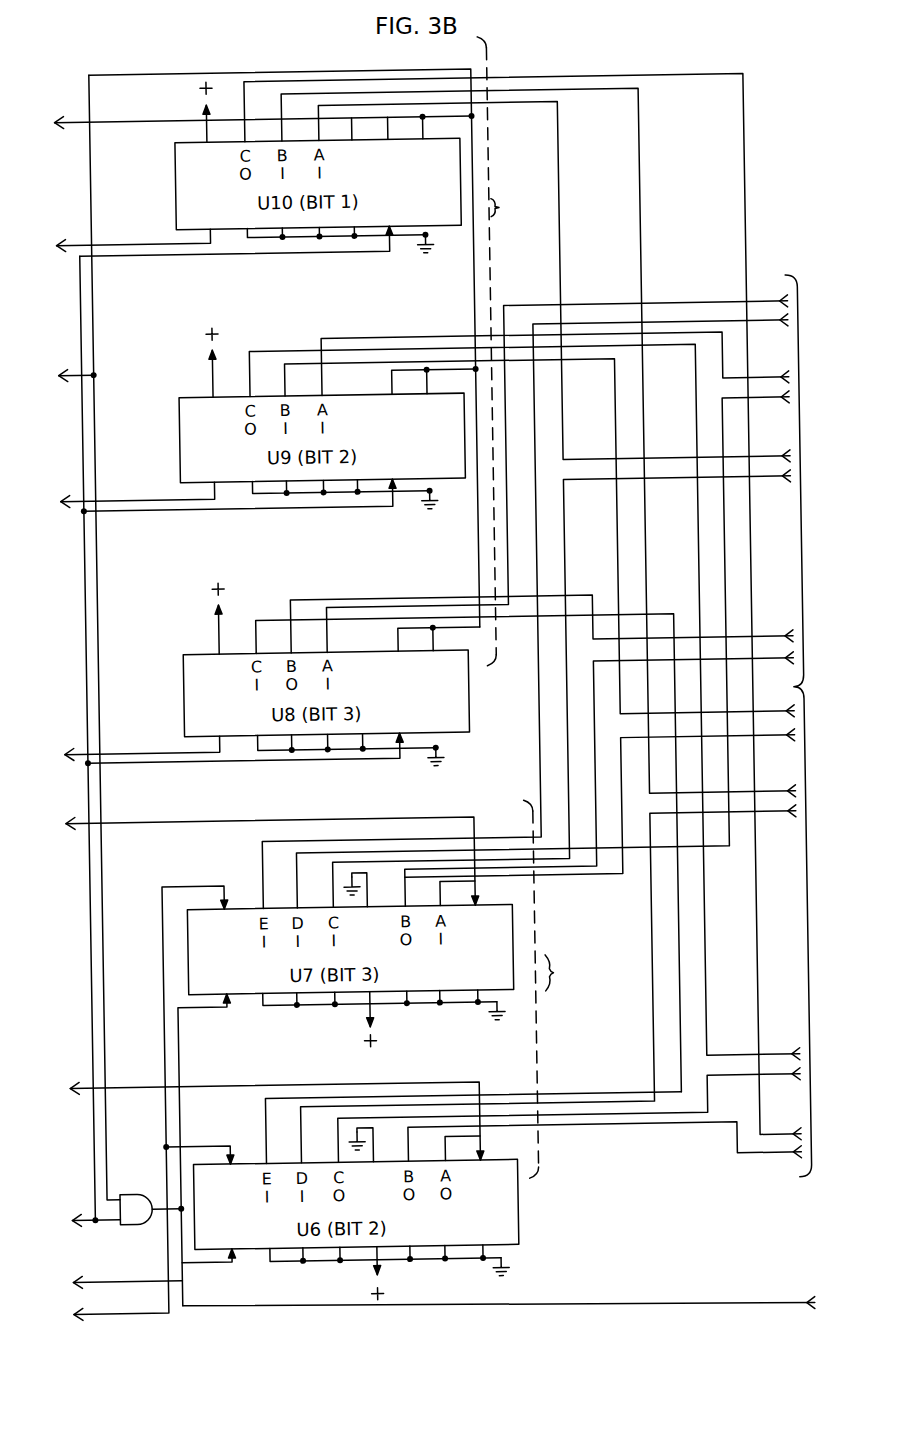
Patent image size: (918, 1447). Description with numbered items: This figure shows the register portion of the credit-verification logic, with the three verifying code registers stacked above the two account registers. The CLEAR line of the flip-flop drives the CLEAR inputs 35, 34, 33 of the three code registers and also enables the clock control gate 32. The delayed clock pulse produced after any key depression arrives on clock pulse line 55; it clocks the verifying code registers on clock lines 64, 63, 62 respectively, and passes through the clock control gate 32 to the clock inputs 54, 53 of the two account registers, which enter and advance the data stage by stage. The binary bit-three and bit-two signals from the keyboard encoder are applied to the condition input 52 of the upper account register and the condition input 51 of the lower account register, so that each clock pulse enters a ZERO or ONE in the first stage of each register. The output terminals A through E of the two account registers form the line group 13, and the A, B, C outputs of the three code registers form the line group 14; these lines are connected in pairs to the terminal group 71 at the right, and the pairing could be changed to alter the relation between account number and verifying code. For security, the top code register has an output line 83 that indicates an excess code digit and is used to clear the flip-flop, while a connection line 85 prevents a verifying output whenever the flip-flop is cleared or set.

The output line 83 is at (368, 111).
The clock line 64 is at (433, 119).
The CLEAR input 35 is at (399, 240).
The line group 14 is at (504, 351).
The clock line 63 is at (434, 372).
The CLEAR input 34 is at (398, 493).
The clock line 62 is at (436, 630).
The CLEAR input 33 is at (401, 746).
The condition input 52 is at (477, 888).
The line group 13 is at (555, 988).
The clock input 54 is at (196, 1004).
The clock pulse line 55 is at (100, 1114).
The clock control gate 32 is at (131, 1211).
The clock input 53 is at (198, 1260).
The condition input 51 is at (479, 1146).
The connection line 85 is at (643, 1304).
The terminal group 71 is at (815, 725).